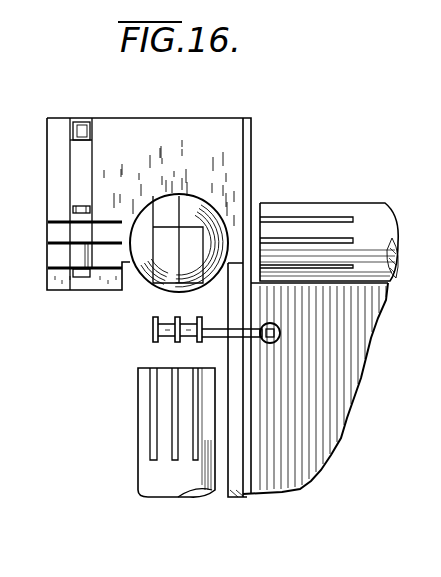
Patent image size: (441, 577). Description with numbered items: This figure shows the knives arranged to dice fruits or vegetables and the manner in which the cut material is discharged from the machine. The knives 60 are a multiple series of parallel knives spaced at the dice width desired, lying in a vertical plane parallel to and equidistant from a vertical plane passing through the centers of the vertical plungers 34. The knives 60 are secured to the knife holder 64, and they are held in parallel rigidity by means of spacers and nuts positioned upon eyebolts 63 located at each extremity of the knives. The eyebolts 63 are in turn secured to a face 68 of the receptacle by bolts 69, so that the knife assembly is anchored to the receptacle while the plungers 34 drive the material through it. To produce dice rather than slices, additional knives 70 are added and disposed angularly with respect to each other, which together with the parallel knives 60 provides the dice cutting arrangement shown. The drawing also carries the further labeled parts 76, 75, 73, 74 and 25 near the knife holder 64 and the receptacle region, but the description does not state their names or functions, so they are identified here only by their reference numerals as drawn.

The knife holder 64 is at (252, 128).
The stop member 76 is at (80, 121).
The guide channel 75 is at (78, 187).
The additional knives 70 is at (283, 178).
The base block 73 is at (62, 270).
The latch member 74 is at (87, 278).
The slotted tube 25 is at (367, 213).
The face of receptacle 68 is at (318, 437).
The knives 60 is at (197, 345).
The eyebolts 63 is at (218, 335).
The bolts 69 is at (283, 330).
The vertical plungers 34 is at (150, 473).